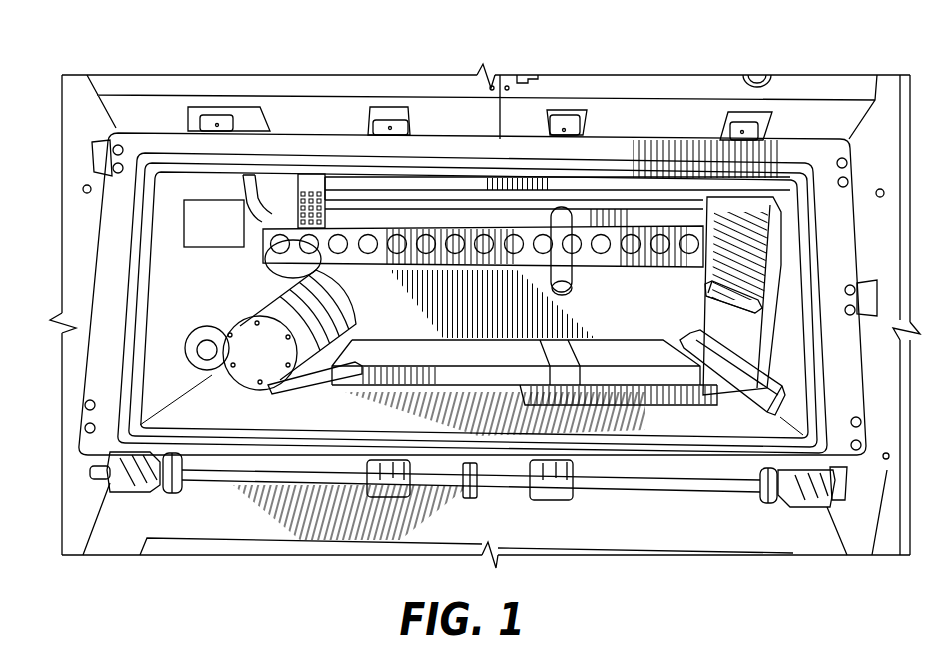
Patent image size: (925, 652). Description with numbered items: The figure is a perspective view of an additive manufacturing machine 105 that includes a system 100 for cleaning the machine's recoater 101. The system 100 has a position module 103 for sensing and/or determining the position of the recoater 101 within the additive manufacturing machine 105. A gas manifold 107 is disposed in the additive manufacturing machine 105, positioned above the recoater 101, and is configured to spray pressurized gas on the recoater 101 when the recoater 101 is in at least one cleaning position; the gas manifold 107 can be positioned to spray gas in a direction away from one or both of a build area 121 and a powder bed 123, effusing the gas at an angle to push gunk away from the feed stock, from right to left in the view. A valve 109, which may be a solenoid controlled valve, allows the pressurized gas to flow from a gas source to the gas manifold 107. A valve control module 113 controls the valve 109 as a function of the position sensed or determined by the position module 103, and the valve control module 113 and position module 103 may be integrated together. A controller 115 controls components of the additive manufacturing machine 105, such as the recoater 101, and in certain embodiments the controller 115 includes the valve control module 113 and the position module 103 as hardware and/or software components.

The system 100 is at (485, 316).
The recoater 101 is at (148, 345).
The position module 103 is at (195, 183).
The additive manufacturing machine 105 is at (447, 161).
The gas manifold 107 is at (284, 228).
The valve 109 is at (266, 268).
The valve control module 113 is at (180, 283).
The controller 115 is at (483, 251).
The build area 121 is at (612, 372).
The powder bed 123 is at (457, 367).